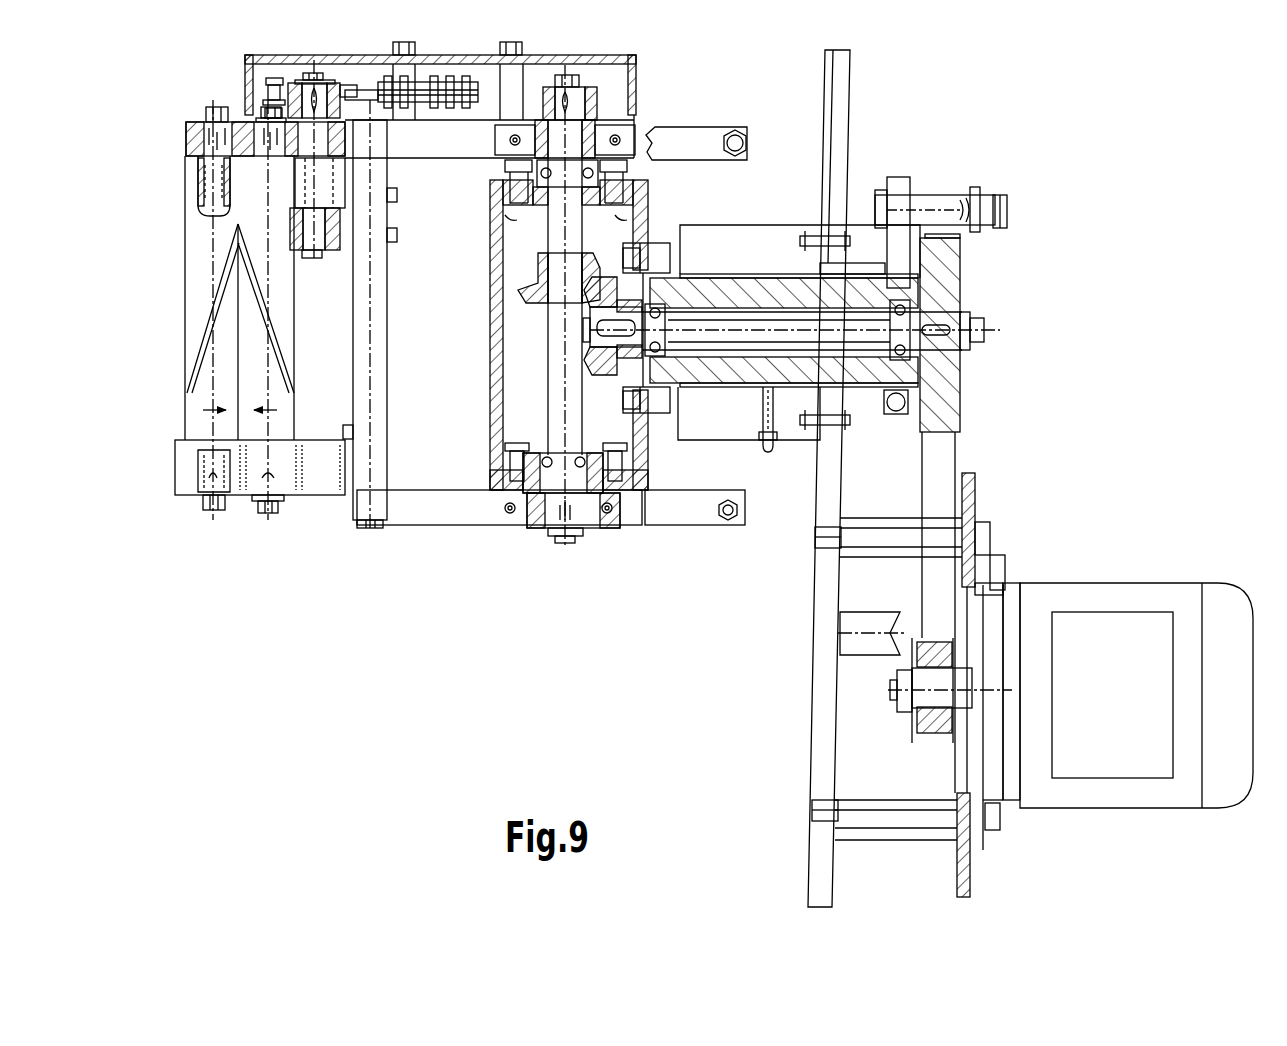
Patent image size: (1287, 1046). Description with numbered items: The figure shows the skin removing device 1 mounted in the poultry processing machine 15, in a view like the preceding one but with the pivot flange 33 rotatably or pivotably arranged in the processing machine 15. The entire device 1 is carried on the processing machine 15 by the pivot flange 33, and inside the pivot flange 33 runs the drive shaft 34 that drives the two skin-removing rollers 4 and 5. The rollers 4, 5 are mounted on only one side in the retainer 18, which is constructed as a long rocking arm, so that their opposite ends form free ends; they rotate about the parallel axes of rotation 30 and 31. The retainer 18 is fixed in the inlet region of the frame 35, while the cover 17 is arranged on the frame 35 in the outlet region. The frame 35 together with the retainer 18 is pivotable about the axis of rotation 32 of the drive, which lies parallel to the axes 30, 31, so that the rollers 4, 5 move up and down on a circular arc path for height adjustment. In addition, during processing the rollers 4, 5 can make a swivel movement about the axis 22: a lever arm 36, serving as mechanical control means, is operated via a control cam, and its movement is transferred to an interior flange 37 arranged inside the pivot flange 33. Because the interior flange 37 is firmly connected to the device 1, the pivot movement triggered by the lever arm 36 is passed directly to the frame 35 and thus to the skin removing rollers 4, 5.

The device 1 is at (403, 636).
The skin-removing roller 4 is at (195, 282).
The skin-removing roller 5 is at (245, 370).
The poultry processing machine 15 is at (840, 125).
The cover 17 is at (325, 485).
The retainer 18 is at (186, 136).
The axis 22 is at (986, 350).
The axis of rotation 30 is at (212, 520).
The axis of rotation 31 is at (266, 518).
The axis of rotation 32 is at (555, 397).
The pivot flange 33 is at (710, 243).
The drive shaft 34 is at (770, 305).
The frame 35 is at (455, 510).
The lever arm 36 is at (930, 200).
The interior flange 37 is at (756, 392).